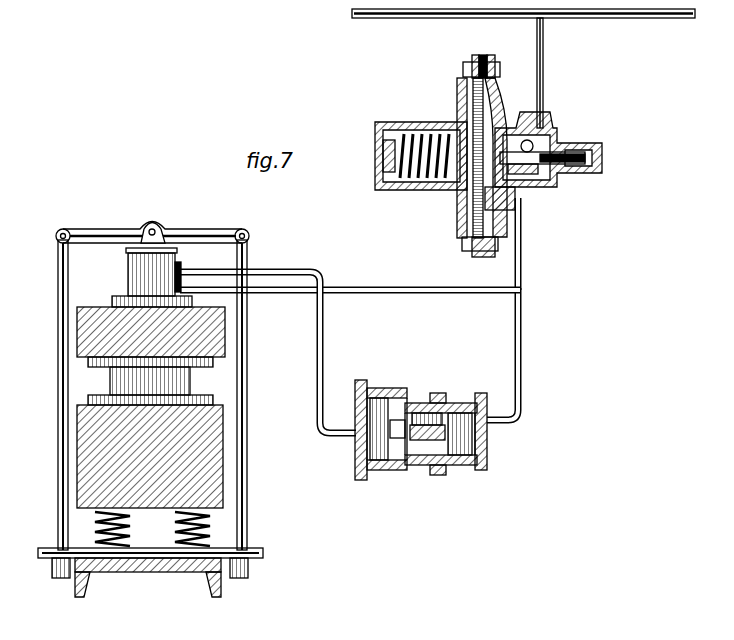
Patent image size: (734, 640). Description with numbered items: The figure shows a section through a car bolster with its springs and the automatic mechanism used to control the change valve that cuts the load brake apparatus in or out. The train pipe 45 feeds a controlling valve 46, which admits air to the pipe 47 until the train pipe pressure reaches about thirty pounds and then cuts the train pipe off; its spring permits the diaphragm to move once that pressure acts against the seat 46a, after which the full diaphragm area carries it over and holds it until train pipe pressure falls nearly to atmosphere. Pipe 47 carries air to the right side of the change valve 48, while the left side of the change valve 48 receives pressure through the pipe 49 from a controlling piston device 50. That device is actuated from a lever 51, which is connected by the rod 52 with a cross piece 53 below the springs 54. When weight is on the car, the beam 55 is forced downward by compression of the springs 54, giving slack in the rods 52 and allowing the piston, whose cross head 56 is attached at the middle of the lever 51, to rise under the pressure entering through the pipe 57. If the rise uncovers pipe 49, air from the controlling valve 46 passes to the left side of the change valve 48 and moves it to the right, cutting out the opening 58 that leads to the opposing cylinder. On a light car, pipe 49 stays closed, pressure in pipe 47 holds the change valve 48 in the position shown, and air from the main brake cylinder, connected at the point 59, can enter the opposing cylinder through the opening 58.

The train pipe 45 is at (432, 19).
The controlling valve 46 is at (488, 156).
The seat 46a is at (524, 212).
The pipe 47 is at (522, 362).
The change valve 48 is at (402, 395).
The pipe 49 is at (275, 271).
The controlling piston device 50 is at (140, 278).
The lever 51 is at (112, 222).
The rod 52 is at (60, 448).
The cross piece 53 is at (256, 550).
The springs 54 is at (176, 528).
The beam 55 is at (212, 333).
The cross head 56 is at (160, 231).
The pipe 57 is at (372, 282).
The opening 58 is at (437, 475).
The point 59 is at (444, 394).